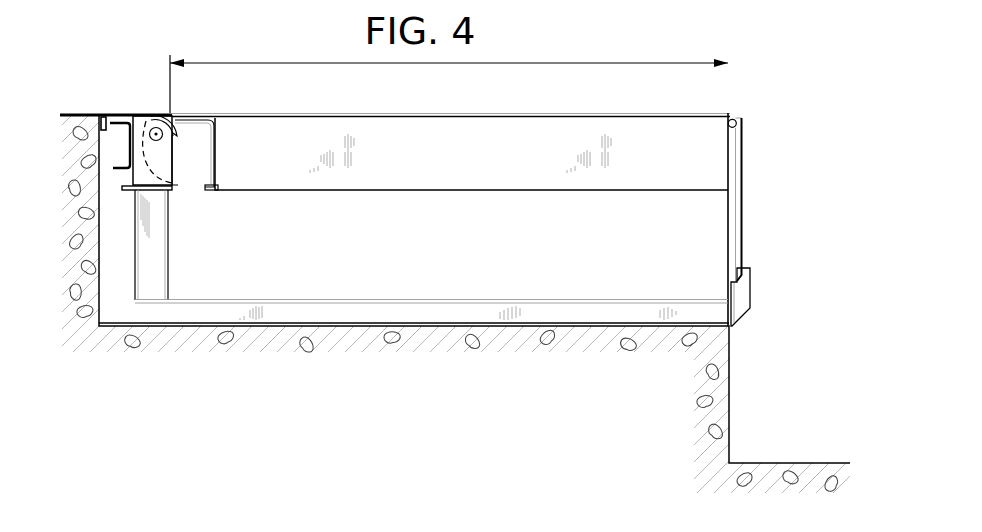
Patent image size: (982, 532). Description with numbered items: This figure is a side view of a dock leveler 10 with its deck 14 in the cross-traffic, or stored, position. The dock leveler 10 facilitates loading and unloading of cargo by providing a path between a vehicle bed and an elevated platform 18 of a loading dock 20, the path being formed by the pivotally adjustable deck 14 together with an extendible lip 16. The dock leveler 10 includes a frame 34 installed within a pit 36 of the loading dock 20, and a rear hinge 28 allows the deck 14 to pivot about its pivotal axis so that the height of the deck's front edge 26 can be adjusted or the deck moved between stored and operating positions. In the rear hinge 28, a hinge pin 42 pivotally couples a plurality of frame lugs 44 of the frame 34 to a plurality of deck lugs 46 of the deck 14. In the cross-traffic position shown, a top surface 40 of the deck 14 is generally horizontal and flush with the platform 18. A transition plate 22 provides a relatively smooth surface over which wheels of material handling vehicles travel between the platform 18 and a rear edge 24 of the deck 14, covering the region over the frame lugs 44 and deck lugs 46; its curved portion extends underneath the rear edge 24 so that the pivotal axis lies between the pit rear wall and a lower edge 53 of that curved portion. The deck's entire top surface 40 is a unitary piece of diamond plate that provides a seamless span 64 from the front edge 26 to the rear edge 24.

The dock leveler 10 is at (790, 135).
The deck 14 is at (422, 192).
The lip 16 is at (745, 195).
The platform 18 is at (74, 114).
The loading dock 20 is at (783, 382).
The transition plate 22 is at (150, 113).
The rear edge 24 is at (172, 113).
The front edge 26 is at (732, 115).
The rear hinge 28 is at (188, 195).
The frame 34 is at (581, 298).
The pit 36 is at (434, 268).
The top surface 40 is at (480, 113).
The hinge pin 42 is at (173, 138).
The frame lugs 44 is at (123, 189).
The deck lugs 46 is at (202, 183).
The lower edge 53 is at (161, 140).
The seamless span 64 is at (342, 65).